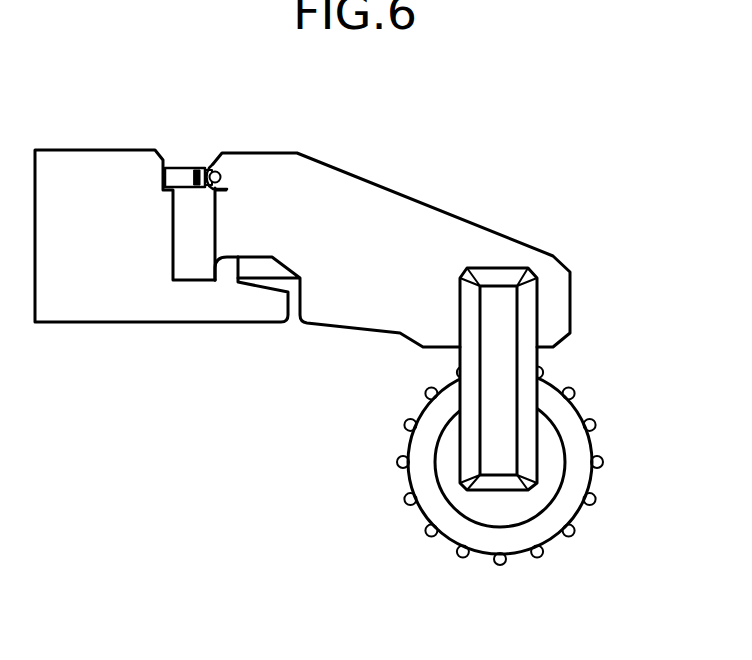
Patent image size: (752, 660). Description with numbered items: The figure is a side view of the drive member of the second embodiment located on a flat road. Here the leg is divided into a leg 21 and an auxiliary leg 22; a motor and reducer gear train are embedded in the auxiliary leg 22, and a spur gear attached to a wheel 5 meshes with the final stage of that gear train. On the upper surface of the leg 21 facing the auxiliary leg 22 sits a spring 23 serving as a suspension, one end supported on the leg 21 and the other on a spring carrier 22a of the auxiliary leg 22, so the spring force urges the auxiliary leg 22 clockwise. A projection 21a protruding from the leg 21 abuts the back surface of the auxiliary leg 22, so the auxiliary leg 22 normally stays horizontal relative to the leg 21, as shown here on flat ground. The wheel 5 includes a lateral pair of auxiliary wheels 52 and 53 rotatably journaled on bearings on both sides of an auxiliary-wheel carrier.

The leg 21 is at (115, 168).
The projection 21a is at (227, 268).
The auxiliary leg 22 is at (443, 233).
The spring carrier 22a is at (222, 170).
The spring 23 is at (178, 175).
The wheel 5 is at (560, 422).
The auxiliary wheel 52 is at (575, 522).
The auxiliary wheel 53 is at (537, 552).